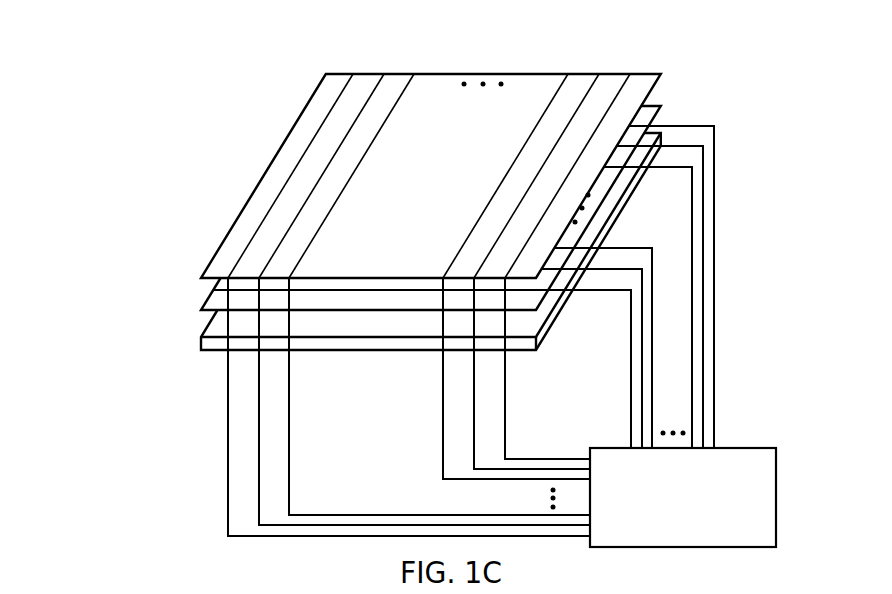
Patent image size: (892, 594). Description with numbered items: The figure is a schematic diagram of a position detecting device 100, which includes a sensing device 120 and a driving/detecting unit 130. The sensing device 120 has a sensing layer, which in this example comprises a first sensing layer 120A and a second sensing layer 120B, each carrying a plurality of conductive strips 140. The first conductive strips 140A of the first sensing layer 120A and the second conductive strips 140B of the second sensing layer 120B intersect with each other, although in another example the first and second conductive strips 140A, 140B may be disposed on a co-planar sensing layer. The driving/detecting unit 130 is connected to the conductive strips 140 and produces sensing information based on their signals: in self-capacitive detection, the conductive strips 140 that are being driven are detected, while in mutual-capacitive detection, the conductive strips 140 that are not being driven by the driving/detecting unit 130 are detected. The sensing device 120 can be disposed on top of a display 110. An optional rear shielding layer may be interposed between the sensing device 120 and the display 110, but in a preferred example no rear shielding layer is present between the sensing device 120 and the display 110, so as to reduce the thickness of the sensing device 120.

The position detecting device 100 is at (263, 87).
The display 110 is at (218, 322).
The sensing device 120 is at (92, 232).
The first sensing layer 120A is at (227, 270).
The second sensing layer 120B is at (213, 300).
The driving/detecting unit 130 is at (666, 533).
The conductive strips 140 is at (777, 33).
The first conductive strips 140A is at (628, 77).
The second conductive strips 140B is at (642, 119).